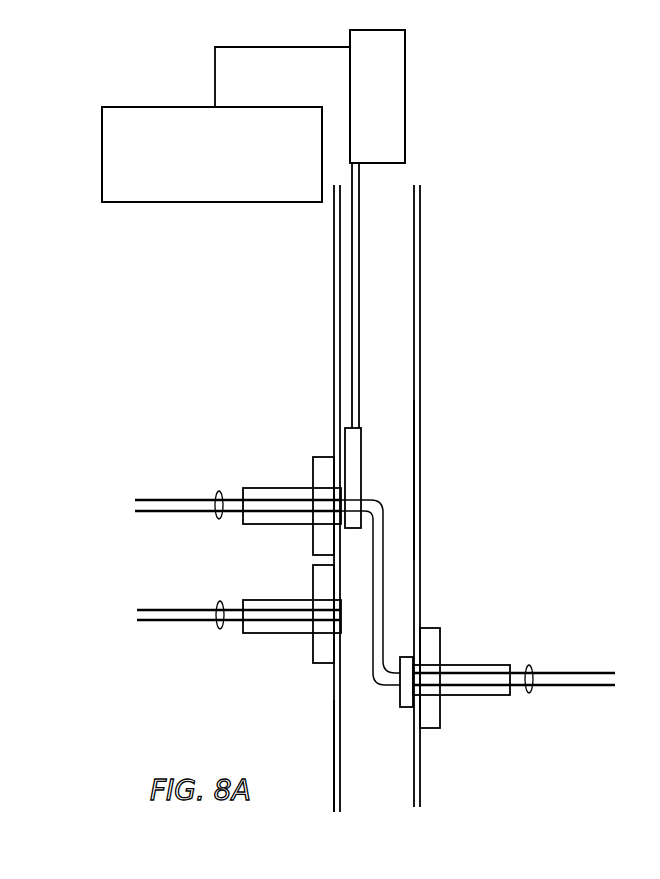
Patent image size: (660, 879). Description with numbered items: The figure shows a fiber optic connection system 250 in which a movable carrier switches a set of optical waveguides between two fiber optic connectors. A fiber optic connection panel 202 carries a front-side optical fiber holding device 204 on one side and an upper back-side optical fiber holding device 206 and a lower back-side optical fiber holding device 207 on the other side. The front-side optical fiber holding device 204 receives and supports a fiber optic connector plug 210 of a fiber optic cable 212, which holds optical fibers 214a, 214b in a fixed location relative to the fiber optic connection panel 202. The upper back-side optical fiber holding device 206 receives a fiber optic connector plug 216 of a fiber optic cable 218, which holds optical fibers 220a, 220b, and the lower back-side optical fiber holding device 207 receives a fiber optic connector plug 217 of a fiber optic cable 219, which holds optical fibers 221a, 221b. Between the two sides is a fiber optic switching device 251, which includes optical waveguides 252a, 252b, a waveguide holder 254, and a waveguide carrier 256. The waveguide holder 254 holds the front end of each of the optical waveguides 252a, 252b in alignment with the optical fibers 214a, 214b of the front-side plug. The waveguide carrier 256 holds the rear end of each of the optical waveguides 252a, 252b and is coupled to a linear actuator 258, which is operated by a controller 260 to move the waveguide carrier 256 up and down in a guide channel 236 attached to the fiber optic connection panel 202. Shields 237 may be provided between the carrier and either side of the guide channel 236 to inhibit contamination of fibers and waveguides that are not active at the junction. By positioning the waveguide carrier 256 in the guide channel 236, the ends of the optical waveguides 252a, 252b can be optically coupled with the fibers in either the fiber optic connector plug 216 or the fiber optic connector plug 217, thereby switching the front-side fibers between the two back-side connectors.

The fiber optic connection system 250 is at (506, 150).
The linear actuator 258 is at (395, 106).
The controller 260 is at (271, 196).
The guide channel 236 is at (332, 244).
The shields 237 is at (341, 777).
The fiber optic connection panel 202 is at (420, 258).
The fiber optic switching device 251 is at (416, 481).
The waveguide carrier 256 is at (362, 442).
The upper back-side optical fiber holding device 206 is at (313, 540).
The lower back-side optical fiber holding device 207 is at (313, 650).
The fiber optic connector plug 216 is at (278, 488).
The fiber optic connector plug 217 is at (280, 600).
The fiber optic cable 218 is at (198, 498).
The fiber optic cable 219 is at (198, 609).
The optical fiber 220a is at (168, 499).
The optical fiber 220b is at (175, 512).
The optical fiber 221a is at (168, 609).
The optical fiber 221b is at (175, 622).
The optical waveguide 252a is at (384, 530).
The optical waveguide 252b is at (374, 541).
The front-side optical fiber holding device 204 is at (440, 648).
The waveguide holder 254 is at (405, 708).
The fiber optic connector plug 210 is at (478, 697).
The fiber optic cable 212 is at (520, 687).
The optical fiber 214a is at (583, 672).
The optical fiber 214b is at (559, 687).